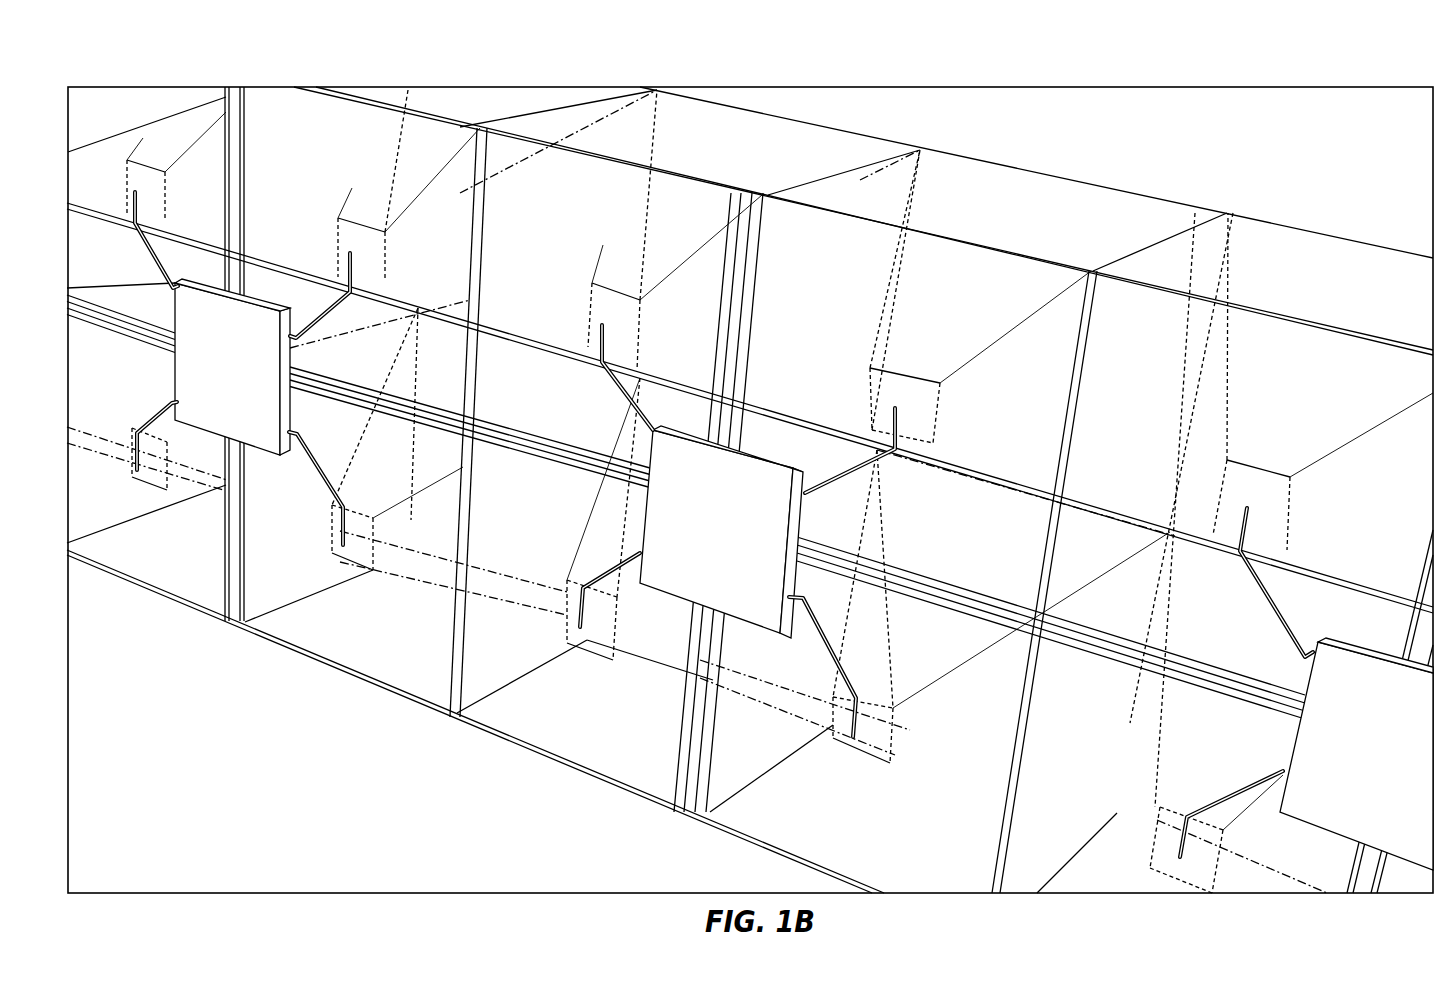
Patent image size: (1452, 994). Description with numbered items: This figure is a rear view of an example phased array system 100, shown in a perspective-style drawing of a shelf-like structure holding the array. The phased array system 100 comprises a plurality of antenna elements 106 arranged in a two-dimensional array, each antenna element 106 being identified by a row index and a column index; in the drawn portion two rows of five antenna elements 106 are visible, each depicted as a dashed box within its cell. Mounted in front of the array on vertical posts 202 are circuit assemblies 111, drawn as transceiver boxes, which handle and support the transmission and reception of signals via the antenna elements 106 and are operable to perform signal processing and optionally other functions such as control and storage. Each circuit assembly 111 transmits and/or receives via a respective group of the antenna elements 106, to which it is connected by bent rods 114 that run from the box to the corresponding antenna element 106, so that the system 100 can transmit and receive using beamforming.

The phased array system 100 is at (1370, 52).
The rail post 202 is at (734, 217).
The antenna element 106 is at (1138, 887).
The circuit assembly 111 is at (1388, 782).
The antenna 114 is at (1250, 787).